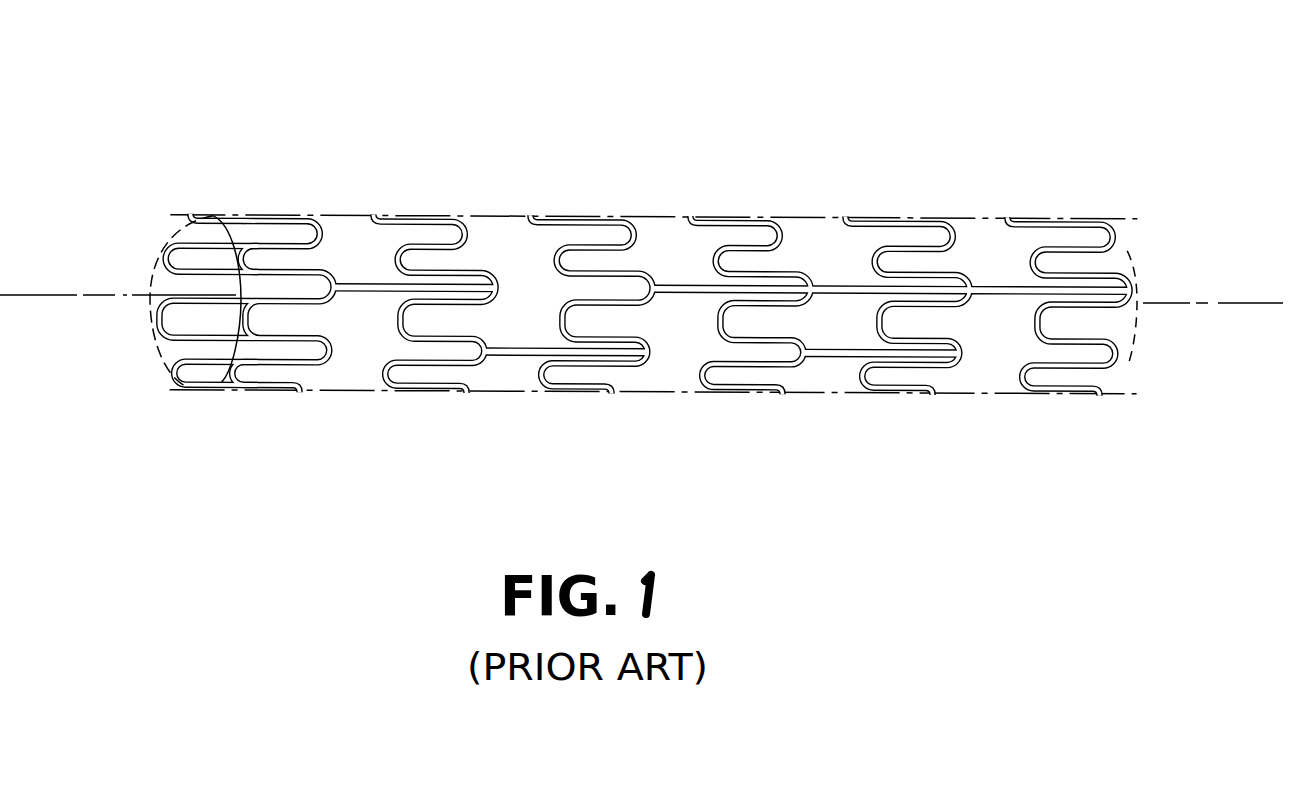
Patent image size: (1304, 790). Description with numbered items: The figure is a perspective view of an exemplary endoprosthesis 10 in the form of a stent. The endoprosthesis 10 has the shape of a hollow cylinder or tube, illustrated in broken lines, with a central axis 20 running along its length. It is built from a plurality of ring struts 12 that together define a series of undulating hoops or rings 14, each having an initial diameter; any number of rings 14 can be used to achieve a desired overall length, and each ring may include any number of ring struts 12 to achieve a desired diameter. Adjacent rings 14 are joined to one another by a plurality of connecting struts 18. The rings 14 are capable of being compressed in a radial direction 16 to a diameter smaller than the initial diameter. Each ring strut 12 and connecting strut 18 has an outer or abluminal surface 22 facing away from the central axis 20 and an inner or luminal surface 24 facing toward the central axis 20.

The endoprosthesis 10 is at (746, 84).
The ring strut 12 is at (1115, 272).
The ring 14 is at (642, 314).
The radial direction 16 is at (1086, 190).
The connecting strut 18 is at (995, 287).
The central axis 20 is at (37, 293).
The abluminal surface 22 is at (333, 365).
The luminal surface 24 is at (171, 349).